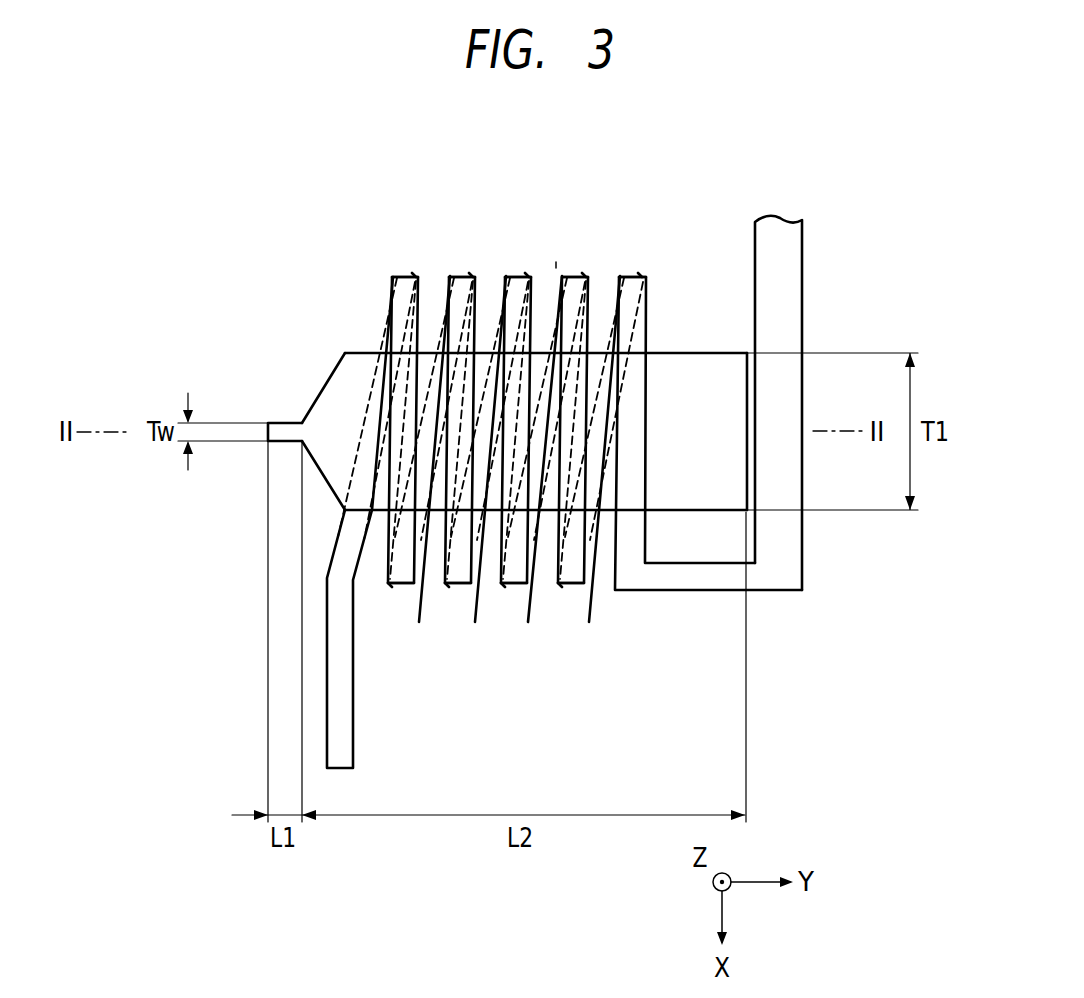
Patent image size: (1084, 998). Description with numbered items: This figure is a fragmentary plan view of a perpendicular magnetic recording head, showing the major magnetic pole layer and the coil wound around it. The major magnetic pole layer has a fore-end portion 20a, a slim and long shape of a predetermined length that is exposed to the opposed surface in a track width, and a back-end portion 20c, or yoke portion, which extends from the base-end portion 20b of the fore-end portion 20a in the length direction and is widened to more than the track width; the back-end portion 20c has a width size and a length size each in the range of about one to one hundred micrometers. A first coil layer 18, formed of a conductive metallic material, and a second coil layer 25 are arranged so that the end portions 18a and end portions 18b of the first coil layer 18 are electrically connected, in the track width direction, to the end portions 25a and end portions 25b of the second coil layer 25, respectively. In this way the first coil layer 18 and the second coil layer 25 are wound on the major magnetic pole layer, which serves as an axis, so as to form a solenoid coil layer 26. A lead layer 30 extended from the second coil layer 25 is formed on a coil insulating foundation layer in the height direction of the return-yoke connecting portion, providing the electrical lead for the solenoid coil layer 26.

The first coil layer 18 is at (485, 522).
The end portions of the first coil layer 18a is at (412, 272).
The end portions of the first coil layer 18b is at (390, 586).
The fore-end portion 20a is at (285, 423).
The base-end portion 20b is at (302, 423).
The back-end portion (yoke portion) 20c is at (345, 377).
The second coil layer 25 is at (418, 332).
The end portions of the second coil layer 25a is at (394, 275).
The end portions of the second coil layer 25b is at (402, 588).
The solenoid coil layer 26 is at (555, 270).
The lead layer 30 is at (803, 276).